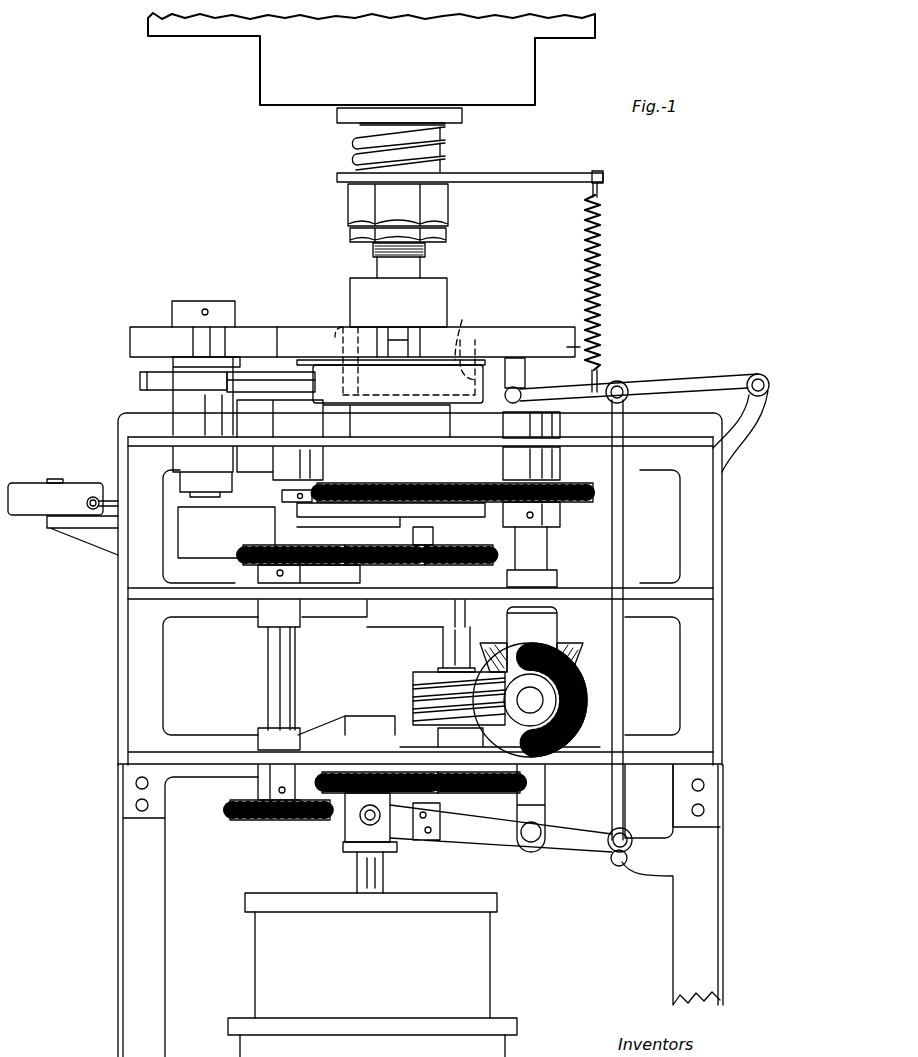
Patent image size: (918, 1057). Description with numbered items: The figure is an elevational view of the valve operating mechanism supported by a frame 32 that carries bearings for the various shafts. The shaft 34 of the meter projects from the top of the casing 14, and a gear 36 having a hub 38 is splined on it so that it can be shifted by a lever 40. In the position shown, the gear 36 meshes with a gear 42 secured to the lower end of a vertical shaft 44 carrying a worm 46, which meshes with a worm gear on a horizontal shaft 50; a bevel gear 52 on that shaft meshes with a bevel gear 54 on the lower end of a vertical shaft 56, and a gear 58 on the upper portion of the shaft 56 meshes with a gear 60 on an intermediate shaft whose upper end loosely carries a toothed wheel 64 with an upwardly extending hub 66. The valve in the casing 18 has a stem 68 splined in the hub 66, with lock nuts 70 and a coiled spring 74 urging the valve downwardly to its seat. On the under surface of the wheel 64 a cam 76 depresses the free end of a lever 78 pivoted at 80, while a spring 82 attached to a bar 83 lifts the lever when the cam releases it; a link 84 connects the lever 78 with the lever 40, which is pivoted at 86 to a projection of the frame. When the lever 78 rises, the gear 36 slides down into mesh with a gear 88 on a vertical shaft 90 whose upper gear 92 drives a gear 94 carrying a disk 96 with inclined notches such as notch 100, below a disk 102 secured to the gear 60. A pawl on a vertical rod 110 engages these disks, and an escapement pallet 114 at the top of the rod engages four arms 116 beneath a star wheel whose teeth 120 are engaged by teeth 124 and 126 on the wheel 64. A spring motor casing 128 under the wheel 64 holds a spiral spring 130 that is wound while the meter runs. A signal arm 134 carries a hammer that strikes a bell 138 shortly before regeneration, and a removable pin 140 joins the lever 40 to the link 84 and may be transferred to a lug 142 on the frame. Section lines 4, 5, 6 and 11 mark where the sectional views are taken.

The casing 14 is at (504, 1052).
The valve casing 18 is at (535, 82).
The frame 32 is at (722, 697).
The shaft 34 is at (383, 874).
The gear 36 is at (338, 772).
The hub 38 is at (350, 832).
The lever 40 is at (490, 832).
The gear 42 is at (440, 776).
The vertical shaft 44 is at (445, 643).
The worm 46 is at (424, 680).
The horizontal shaft 50 is at (545, 708).
The bevel gear 52 is at (560, 690).
The bevel gear 54 is at (570, 652).
The vertical shaft 56 is at (550, 566).
The gear 58 is at (595, 494).
The gear 60 is at (450, 484).
The toothed wheel 64 is at (303, 340).
The hub 66 is at (447, 288).
The stem 68 is at (425, 262).
The lock nuts 70 is at (445, 216).
The coiled spring 74 is at (448, 156).
The cam 76 is at (525, 375).
The lever 78 is at (687, 384).
The pivot 80 is at (763, 378).
The spring 82 is at (603, 262).
The bar 83 is at (552, 182).
The link 84 is at (646, 562).
The pivot 86 is at (545, 820).
The gear 88 is at (257, 820).
The vertical shaft 90 is at (283, 690).
The gear 92 is at (250, 565).
The gear 94 is at (355, 565).
The disk 96 is at (352, 565).
The notch 100 is at (430, 545).
The disk 102 is at (462, 512).
The vertical rod 110 is at (284, 488).
The pallet 114 is at (255, 380).
The arms 116 is at (140, 382).
The teeth 120 is at (143, 330).
The tooth 124 is at (352, 334).
The tooth 126 is at (575, 343).
The spring motor casing 128 is at (497, 362).
The spiral spring 130 is at (467, 328).
The arm 134 is at (93, 497).
The bell 138 is at (36, 483).
The removable pin 140 is at (626, 836).
The lug 142 is at (662, 876).
The section line 4- 4 is at (82, 254).
The section line 5- 5 is at (177, 558).
The section line 6- 6 is at (512, 558).
The section line 11- 11 is at (213, 516).